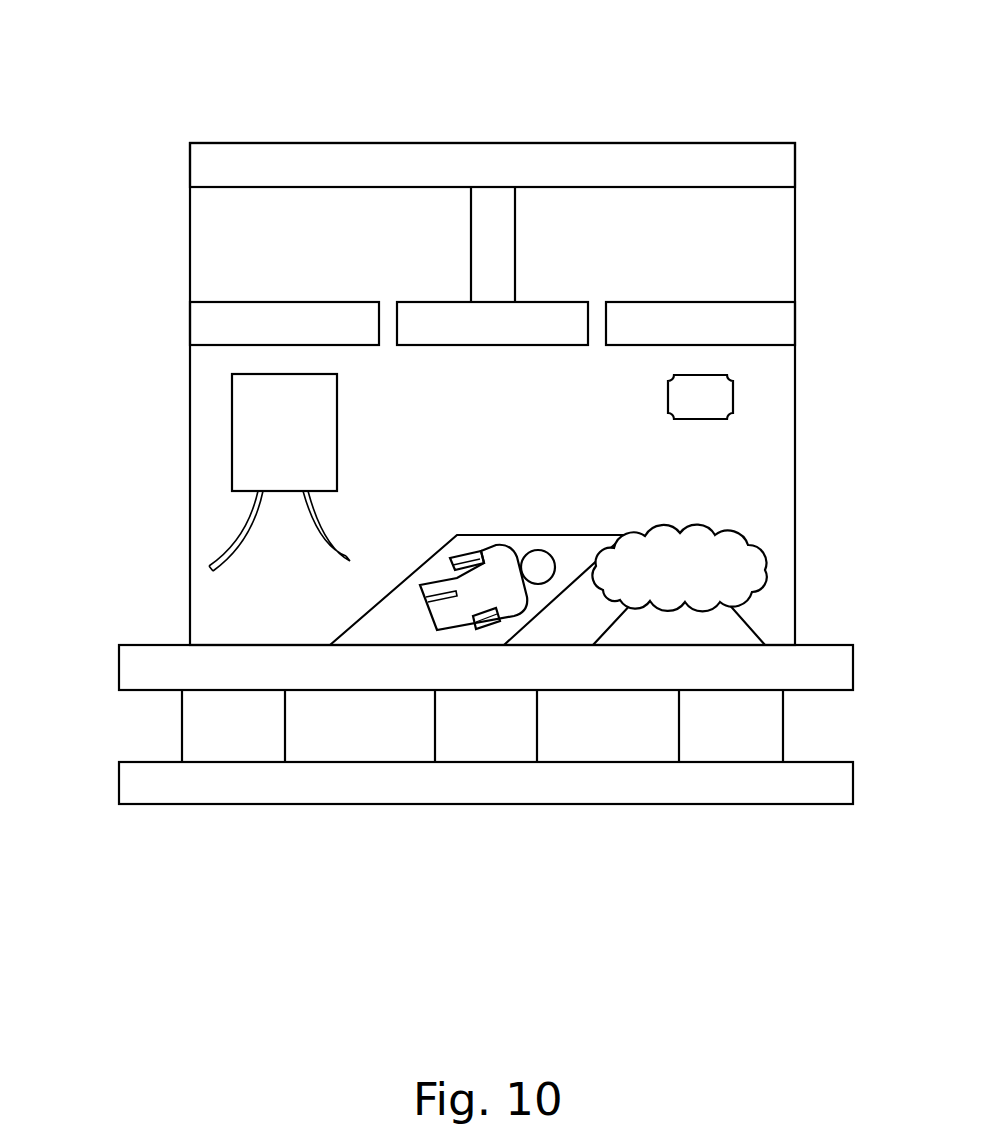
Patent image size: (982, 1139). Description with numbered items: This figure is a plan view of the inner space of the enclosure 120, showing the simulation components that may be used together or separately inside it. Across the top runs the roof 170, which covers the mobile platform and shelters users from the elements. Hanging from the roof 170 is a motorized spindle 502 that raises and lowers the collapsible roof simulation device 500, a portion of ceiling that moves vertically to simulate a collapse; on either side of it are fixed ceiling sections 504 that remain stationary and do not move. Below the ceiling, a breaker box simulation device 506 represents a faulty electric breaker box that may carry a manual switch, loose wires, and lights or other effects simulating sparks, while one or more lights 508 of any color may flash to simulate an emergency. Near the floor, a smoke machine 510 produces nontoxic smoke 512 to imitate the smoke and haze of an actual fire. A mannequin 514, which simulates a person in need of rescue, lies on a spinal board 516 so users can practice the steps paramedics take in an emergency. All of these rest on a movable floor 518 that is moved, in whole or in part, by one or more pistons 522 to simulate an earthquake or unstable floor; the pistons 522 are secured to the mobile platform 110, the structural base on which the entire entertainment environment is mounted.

The enclosure 120 is at (524, 87).
The roof 170 is at (203, 157).
The motorized spindle 502 is at (493, 243).
The fixed ceiling sections 504 is at (220, 320).
The collapsible roof simulation device 500 is at (493, 330).
The breaker box simulation device 506 is at (262, 437).
The lights 508 is at (694, 397).
The spinal board 516 is at (577, 558).
The mannequin 514 is at (487, 587).
The smoke machine 510 is at (703, 623).
The nontoxic smoke 512 is at (702, 559).
The movable floor 518 is at (147, 662).
The pistons 522 is at (488, 718).
The mobile platform 110 is at (147, 783).